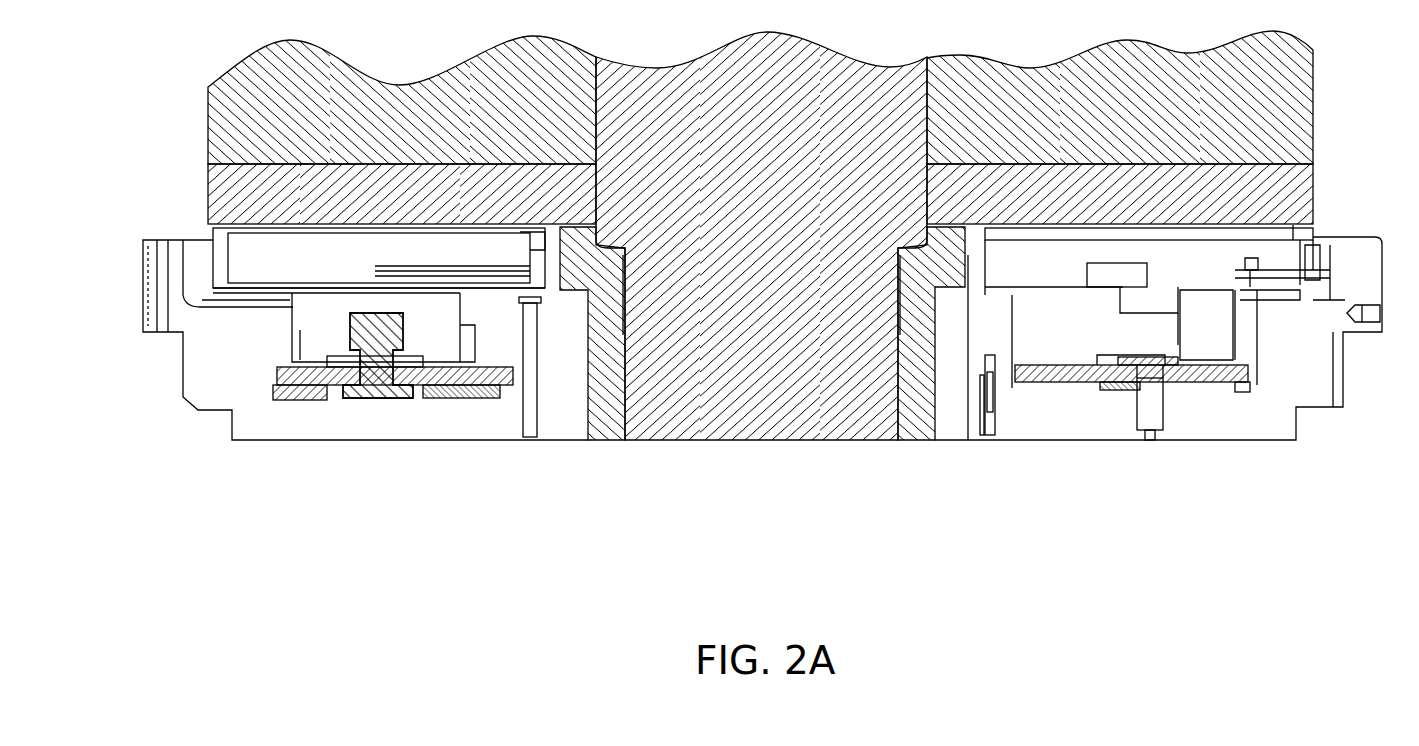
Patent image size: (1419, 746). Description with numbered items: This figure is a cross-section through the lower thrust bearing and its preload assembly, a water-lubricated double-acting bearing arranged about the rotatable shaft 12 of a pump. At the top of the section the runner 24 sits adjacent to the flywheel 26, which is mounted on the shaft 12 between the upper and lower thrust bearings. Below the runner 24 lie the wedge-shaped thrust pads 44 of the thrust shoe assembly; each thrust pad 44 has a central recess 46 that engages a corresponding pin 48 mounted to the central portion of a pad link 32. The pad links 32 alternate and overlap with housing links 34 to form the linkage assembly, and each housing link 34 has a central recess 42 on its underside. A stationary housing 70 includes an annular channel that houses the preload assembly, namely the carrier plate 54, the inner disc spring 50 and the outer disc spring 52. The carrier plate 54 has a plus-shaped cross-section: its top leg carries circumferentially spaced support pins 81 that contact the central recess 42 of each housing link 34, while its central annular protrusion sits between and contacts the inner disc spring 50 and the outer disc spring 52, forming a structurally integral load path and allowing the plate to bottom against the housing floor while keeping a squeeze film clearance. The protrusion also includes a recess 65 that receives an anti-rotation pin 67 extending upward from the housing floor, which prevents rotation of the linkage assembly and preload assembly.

The rotatable shaft 12 is at (734, 440).
The runner 24 is at (215, 184).
The flywheel 26 is at (212, 124).
The pad link 32 is at (1230, 332).
The housing link 34 is at (298, 348).
The central recess 42 is at (305, 362).
The thrust pad 44 is at (1316, 230).
The central recess 46 is at (1160, 262).
The pin 48 is at (1195, 268).
The inner disc spring 50 is at (460, 398).
The outer disc spring 52 is at (307, 392).
The carrier plate 54 is at (398, 396).
The recess 65 is at (1177, 345).
The anti-rotation pin 67 is at (1158, 420).
The stationary housing 70 is at (1327, 387).
The support pin 81 is at (343, 320).